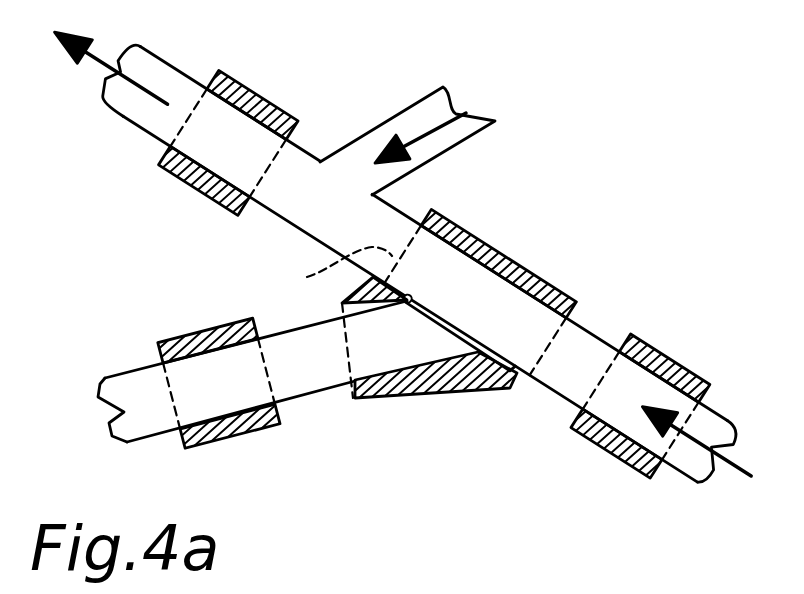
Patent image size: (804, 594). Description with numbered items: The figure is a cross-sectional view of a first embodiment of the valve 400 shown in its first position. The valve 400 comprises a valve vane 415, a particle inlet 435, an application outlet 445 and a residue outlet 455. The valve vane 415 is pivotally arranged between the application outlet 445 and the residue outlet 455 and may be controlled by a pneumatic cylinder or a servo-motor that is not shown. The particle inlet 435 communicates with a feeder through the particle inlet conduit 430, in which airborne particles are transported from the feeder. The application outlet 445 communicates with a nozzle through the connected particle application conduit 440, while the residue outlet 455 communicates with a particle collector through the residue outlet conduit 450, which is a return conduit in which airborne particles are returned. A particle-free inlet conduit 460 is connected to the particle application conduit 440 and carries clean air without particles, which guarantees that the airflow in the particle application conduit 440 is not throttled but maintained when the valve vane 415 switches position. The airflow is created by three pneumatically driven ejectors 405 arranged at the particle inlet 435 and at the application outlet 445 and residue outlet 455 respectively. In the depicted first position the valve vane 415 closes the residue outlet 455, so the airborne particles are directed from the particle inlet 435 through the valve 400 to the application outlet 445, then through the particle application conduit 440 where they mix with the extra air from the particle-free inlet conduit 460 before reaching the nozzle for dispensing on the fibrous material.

The valve 400 is at (470, 236).
The pneumatically driven ejectors 405 is at (268, 101).
The valve vane 415 is at (438, 328).
The particle inlet conduit 430 is at (592, 362).
The particle inlet 435 is at (545, 344).
The particle application conduit 440 is at (298, 205).
The application outlet 445 is at (325, 272).
The residue outlet conduit 450 is at (295, 377).
The residue outlet 455 is at (356, 352).
The particle-free inlet conduit 460 is at (408, 125).